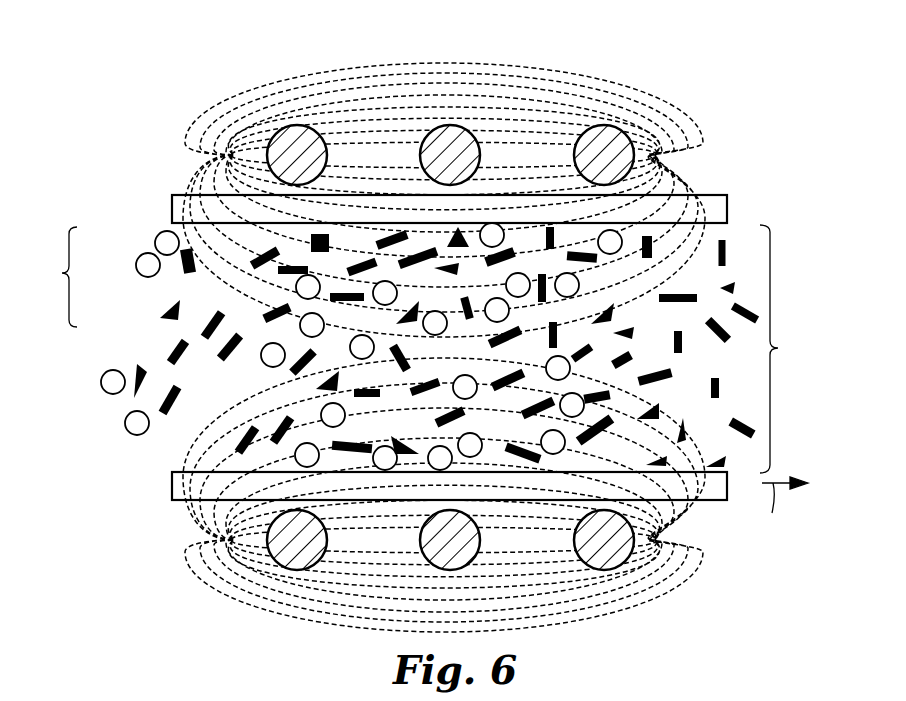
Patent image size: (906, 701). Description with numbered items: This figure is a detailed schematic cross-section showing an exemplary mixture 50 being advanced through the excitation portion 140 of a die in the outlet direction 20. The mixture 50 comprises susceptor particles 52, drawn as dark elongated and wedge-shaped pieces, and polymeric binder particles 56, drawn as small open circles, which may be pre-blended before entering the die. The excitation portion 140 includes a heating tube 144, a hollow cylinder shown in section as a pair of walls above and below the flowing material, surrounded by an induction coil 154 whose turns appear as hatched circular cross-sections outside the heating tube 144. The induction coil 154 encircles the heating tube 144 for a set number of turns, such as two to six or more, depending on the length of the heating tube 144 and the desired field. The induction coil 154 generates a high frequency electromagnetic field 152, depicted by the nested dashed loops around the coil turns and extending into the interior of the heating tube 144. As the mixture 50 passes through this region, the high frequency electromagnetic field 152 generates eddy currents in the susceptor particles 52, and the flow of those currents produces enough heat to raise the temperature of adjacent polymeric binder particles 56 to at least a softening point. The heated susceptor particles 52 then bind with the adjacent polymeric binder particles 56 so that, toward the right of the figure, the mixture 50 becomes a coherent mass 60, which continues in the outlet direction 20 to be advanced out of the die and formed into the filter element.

The excitation portion 140 is at (491, 182).
The high frequency electromagnetic field 152 is at (293, 82).
The induction coil 154 is at (440, 133).
The heating tube 144 is at (183, 483).
The polymeric binder particles 56 is at (146, 263).
The susceptor particles 52 is at (148, 350).
The mixture 50 is at (54, 277).
The coherent mass 60 is at (784, 349).
The outlet direction 20 is at (784, 508).